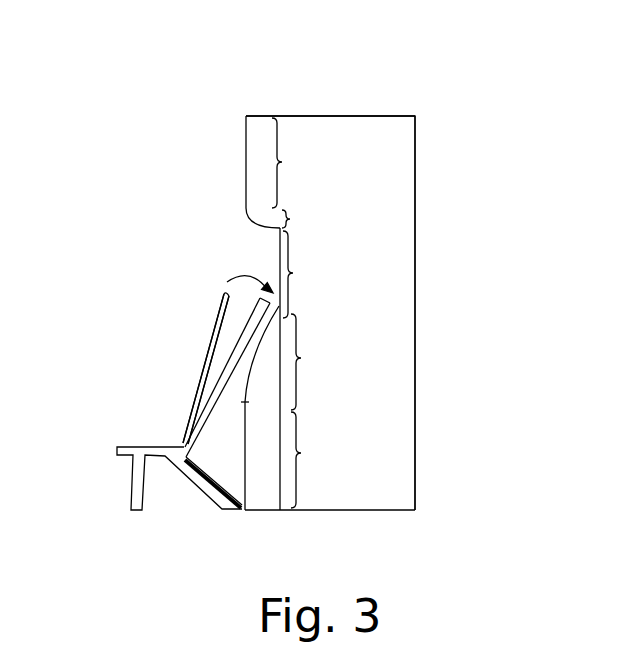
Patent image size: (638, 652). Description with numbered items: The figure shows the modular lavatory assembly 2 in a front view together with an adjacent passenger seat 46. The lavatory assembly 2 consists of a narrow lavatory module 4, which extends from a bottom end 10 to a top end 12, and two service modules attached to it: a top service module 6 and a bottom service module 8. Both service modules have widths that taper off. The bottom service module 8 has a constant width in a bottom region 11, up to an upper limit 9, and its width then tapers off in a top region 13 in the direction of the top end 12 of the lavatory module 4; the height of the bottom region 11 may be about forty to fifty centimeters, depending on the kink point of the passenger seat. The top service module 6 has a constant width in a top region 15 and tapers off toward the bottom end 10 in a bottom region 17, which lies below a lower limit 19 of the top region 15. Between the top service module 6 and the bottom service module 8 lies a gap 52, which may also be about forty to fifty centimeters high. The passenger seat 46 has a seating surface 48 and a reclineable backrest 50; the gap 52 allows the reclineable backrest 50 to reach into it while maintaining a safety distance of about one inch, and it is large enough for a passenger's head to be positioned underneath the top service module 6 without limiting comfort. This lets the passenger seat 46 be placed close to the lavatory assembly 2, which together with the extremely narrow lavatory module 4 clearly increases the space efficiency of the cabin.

The lavatory assembly 2 is at (470, 97).
The lavatory module 4 is at (415, 285).
The top service module 6 is at (261, 138).
The bottom service module 8 is at (262, 487).
The upper limit 9 is at (232, 415).
The bottom end 10 is at (388, 500).
The bottom region 11 is at (309, 460).
The top end 12 is at (306, 78).
The top region 13 is at (309, 362).
The top region 15 is at (298, 163).
The bottom region 17 is at (305, 220).
The lower limit 19 is at (232, 209).
The passenger seat 46 is at (110, 342).
The seating surface 48 is at (125, 446).
The reclineable backrest 50 is at (235, 351).
The gap 52 is at (308, 273).